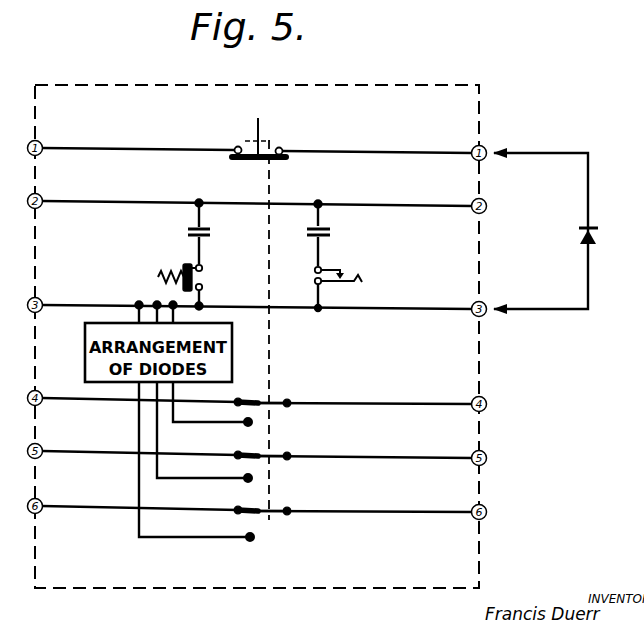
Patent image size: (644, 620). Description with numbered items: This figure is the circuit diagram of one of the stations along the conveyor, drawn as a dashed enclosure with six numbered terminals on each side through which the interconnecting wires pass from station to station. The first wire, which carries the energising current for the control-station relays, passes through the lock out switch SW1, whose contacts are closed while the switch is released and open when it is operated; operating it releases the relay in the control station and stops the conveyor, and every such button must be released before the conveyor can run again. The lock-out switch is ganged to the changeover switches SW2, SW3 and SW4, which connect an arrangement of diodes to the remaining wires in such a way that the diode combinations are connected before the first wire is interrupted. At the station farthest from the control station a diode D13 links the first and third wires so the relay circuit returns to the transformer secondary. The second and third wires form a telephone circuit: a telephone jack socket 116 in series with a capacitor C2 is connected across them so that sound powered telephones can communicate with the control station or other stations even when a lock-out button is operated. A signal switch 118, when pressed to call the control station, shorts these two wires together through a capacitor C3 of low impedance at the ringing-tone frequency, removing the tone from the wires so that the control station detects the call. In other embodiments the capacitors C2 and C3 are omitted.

The jack socket 116 is at (291, 292).
The switch 118 is at (157, 278).
The capacitor C2 is at (336, 234).
The capacitor C3 is at (215, 255).
The diode D13 is at (545, 231).
The lock out switch SW1 is at (295, 134).
The changeover switch SW2 is at (277, 391).
The changeover switch SW3 is at (277, 444).
The changeover switch SW4 is at (277, 498).